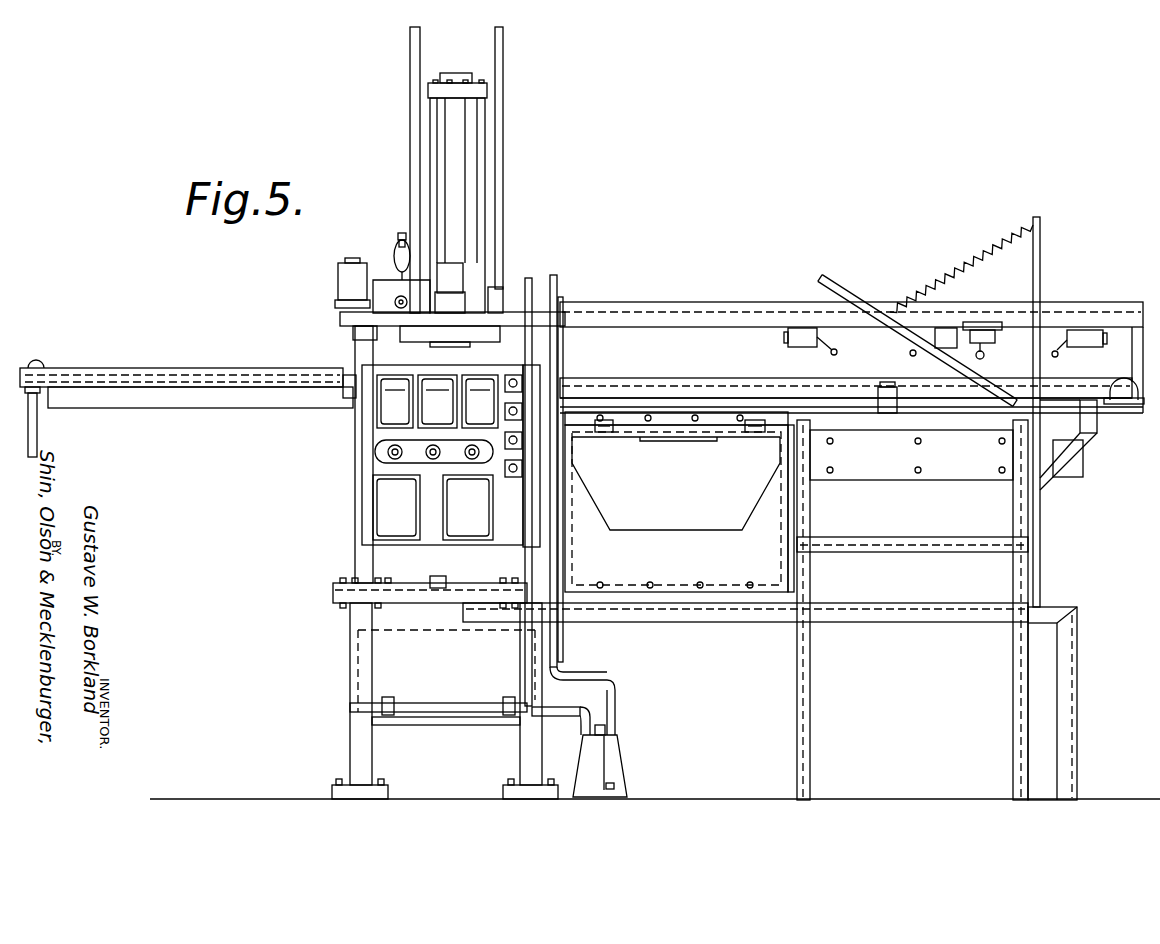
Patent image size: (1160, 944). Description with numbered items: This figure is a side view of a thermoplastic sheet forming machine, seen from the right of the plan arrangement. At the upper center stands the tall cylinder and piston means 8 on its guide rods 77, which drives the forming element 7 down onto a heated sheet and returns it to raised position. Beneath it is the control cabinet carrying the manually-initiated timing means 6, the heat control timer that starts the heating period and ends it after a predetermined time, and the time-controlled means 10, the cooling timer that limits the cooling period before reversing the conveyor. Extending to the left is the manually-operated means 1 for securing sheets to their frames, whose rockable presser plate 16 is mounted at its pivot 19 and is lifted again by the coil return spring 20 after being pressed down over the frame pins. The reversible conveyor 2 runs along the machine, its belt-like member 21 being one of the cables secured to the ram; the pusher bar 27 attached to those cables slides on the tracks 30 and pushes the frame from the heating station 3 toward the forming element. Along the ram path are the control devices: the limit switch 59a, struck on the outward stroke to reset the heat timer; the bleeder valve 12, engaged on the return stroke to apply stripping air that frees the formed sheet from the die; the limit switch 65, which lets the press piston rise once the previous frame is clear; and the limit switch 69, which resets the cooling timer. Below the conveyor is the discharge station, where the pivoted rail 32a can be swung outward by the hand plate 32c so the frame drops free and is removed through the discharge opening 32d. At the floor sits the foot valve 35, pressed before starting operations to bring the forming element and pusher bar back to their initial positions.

The manually-operated means 1 is at (850, 289).
The reversible conveyor 2 is at (250, 368).
The heating station 3 is at (965, 455).
The manually-initiated timing means 6 is at (470, 518).
The forming element 7 is at (404, 342).
The cylinder and piston means 8 is at (455, 198).
The time-controlled means 10 is at (398, 509).
The bleeder valve 12 is at (986, 354).
The presser plate 16 is at (905, 338).
The rockable mounting 19 is at (1050, 400).
The coil return spring 20 is at (960, 264).
The belt-like member 21 is at (178, 368).
The pusher bar 27 is at (888, 415).
The tracks 30 is at (712, 397).
The discharge rail 32a is at (626, 438).
The hand plate 32c is at (688, 440).
The discharge opening 32d is at (600, 500).
The foot valve 35 is at (632, 779).
The limit switch 59a is at (805, 328).
The limit switch 65 is at (1058, 330).
The limit switch 69 is at (945, 328).
The guide rod 77 is at (410, 166).